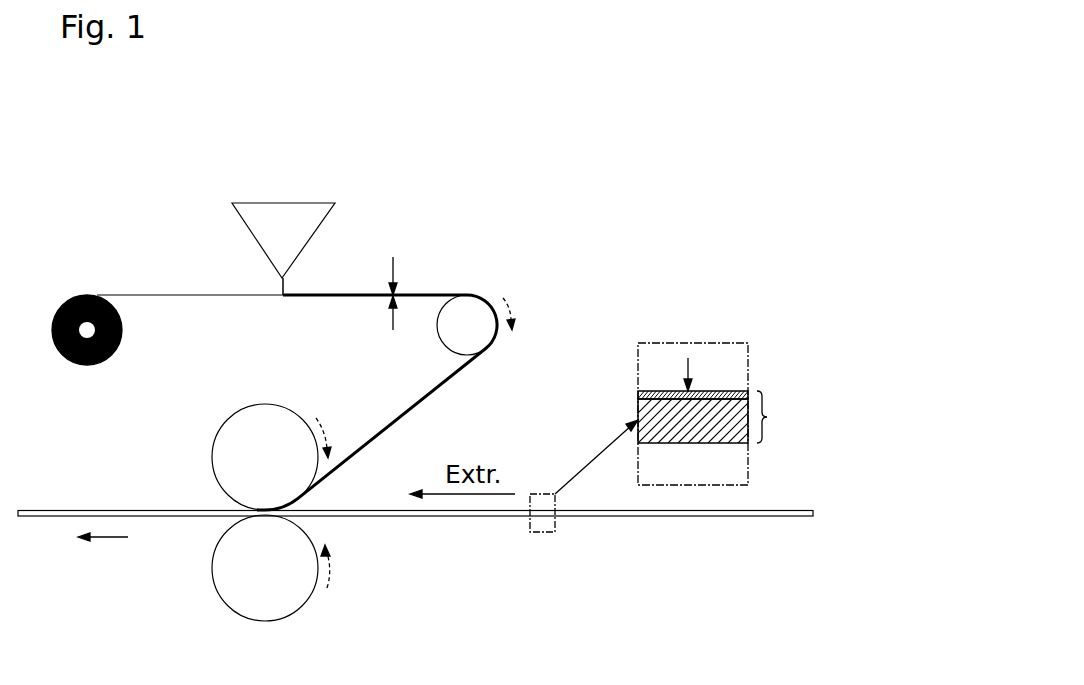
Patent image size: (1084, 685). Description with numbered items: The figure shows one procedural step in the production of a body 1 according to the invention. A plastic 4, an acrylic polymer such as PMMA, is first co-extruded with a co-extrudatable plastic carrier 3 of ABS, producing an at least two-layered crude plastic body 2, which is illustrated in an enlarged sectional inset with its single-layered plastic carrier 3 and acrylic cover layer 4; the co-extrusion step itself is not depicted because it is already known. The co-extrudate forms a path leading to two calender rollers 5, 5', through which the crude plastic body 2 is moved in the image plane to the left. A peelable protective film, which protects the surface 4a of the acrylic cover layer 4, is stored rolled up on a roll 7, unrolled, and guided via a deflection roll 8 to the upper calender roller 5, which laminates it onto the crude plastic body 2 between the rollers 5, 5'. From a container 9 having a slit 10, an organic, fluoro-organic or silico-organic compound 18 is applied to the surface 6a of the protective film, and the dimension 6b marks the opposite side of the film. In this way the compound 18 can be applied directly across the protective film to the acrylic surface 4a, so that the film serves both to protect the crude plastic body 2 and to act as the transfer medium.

The body 1 is at (78, 513).
The crude plastic body 2 is at (420, 513).
The plastic carrier 3 is at (738, 427).
The plastic 4 is at (748, 393).
The surface 4a is at (710, 367).
The calender roller 5 is at (263, 429).
The calender roller 5' is at (280, 594).
The surface of the protective film 6a is at (393, 258).
The belt thickness lower 6b is at (396, 331).
The roll 7 is at (87, 363).
The deflection roll 8 is at (473, 320).
The container 9 is at (278, 238).
The slit 10 is at (282, 279).
The organic, fluoro-organic or silico-organic compound 18 is at (295, 277).